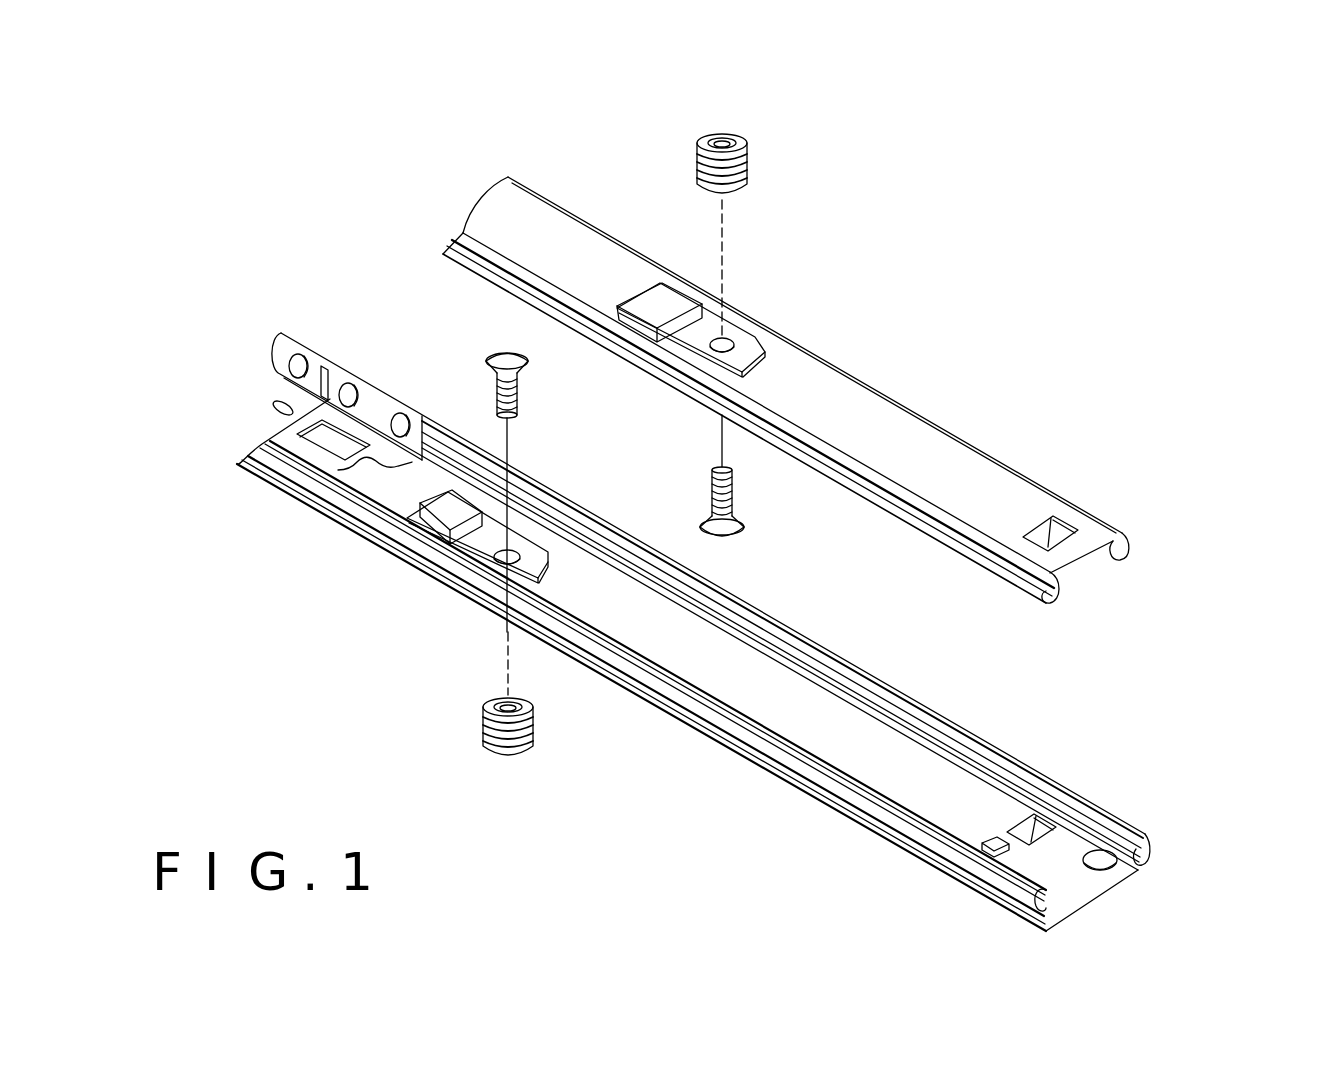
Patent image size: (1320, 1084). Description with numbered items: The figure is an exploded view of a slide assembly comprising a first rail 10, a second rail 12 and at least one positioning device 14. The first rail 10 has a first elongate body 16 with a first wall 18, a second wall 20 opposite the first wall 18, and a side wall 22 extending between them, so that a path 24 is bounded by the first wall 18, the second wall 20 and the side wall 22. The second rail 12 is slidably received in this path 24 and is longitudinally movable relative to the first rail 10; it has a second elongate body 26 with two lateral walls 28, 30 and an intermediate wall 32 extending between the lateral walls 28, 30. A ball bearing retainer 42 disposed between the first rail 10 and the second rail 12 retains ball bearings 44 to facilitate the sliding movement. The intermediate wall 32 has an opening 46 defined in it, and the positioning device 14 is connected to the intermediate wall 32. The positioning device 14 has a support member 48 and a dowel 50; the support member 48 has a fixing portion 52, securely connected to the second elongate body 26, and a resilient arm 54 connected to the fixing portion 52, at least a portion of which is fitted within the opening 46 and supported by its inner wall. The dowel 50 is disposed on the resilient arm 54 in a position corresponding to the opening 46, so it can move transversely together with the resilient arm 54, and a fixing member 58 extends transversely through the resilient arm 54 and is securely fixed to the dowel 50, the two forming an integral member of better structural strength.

The first rail 10 is at (712, 632).
The second rail 12 is at (848, 414).
The positioning device 14 is at (527, 423).
The first elongate body 16 is at (693, 632).
The first wall 18 is at (762, 742).
The second wall 20 is at (843, 672).
The side wall 22 is at (740, 686).
The path 24 is at (1100, 888).
The second elongate body 26 is at (848, 414).
The lateral wall 28 is at (790, 439).
The lateral wall 30 is at (1122, 557).
The intermediate wall 32 is at (1083, 564).
The ball bearing retainer 42 is at (322, 396).
The ball bearings 44 is at (285, 370).
The opening 46 is at (703, 360).
The support member 48 is at (550, 405).
The dowel 50 is at (697, 163).
The fixing portion 52 is at (637, 293).
The resilient arm 54 is at (700, 322).
The fixing member 58 is at (522, 400).